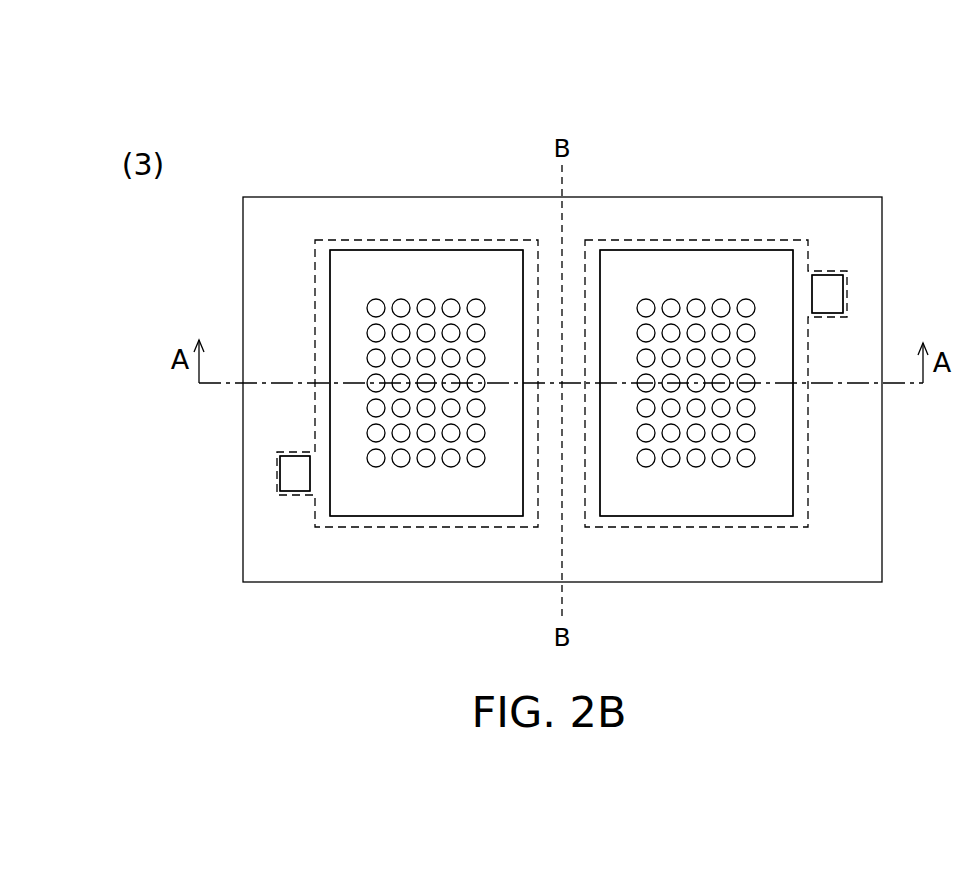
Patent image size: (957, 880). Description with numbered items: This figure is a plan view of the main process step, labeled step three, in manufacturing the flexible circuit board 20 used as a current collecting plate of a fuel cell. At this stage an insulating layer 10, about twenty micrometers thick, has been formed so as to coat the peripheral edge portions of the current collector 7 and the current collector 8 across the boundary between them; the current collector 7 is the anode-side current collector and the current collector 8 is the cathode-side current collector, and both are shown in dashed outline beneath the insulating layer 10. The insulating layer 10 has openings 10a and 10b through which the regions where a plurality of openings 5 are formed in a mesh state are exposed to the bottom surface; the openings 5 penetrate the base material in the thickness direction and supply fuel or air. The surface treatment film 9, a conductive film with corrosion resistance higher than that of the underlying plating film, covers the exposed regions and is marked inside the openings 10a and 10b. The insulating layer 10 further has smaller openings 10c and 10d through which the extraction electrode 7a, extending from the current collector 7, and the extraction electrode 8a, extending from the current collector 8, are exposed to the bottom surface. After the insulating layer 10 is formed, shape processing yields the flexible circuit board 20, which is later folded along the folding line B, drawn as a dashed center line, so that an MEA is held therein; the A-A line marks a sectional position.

The flexible circuit board 20 is at (877, 108).
The insulating layer 10 is at (864, 549).
The current collector 7 is at (425, 240).
The current collector 8 is at (698, 240).
The surface treatment film 9 is at (507, 500).
The openings 5 is at (452, 300).
The extraction electrode 7a is at (292, 470).
The extraction electrode 8a is at (828, 292).
The opening 10a is at (415, 516).
The opening 10b is at (693, 516).
The opening 10c is at (296, 491).
The opening 10d is at (829, 275).